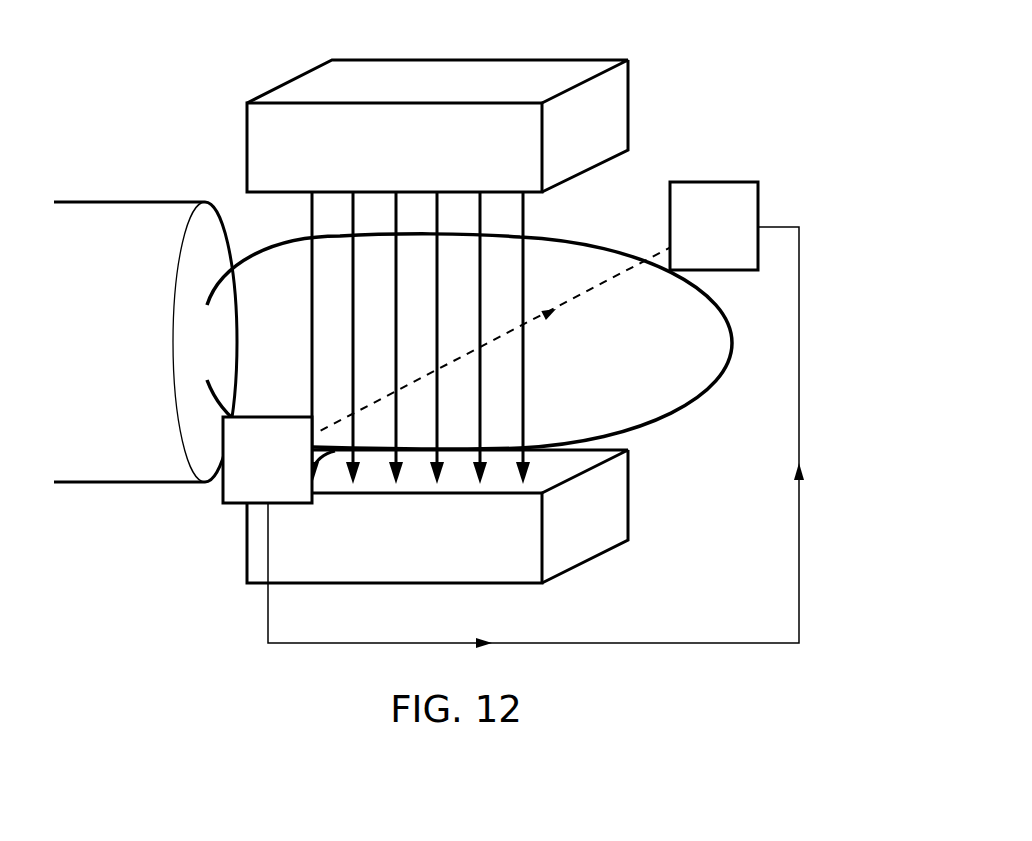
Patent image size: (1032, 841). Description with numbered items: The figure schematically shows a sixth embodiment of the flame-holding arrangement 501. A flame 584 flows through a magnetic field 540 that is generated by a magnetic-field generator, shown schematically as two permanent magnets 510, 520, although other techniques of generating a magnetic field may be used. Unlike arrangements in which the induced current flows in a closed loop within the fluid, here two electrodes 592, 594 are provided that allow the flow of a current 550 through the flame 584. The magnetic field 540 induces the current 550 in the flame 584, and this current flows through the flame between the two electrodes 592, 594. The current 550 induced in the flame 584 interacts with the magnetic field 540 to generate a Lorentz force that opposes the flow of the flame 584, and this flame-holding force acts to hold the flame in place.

The electromagnetic flow assembly 501 is at (812, 46).
The permanent magnet 510 is at (457, 60).
The permanent magnet 520 is at (415, 585).
The magnetic field 540 is at (523, 368).
The current 550 is at (592, 290).
The flame 584 is at (733, 345).
The electrode 592 is at (223, 498).
The electrode 594 is at (715, 182).